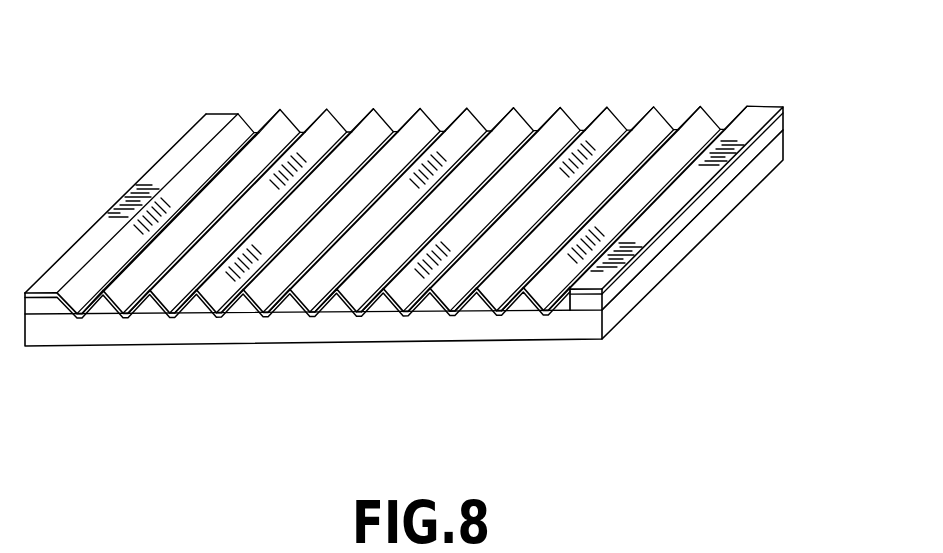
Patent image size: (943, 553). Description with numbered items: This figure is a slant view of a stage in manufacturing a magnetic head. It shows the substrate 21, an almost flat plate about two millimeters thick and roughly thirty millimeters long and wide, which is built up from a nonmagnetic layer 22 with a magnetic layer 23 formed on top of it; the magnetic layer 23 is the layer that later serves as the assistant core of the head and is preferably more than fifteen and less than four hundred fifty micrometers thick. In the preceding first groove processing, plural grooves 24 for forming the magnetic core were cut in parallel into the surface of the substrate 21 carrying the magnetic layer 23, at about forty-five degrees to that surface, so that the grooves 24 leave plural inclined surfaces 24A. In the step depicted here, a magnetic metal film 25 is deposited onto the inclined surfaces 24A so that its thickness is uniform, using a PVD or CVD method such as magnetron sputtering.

The substrate 21 is at (703, 253).
The nonmagnetic layer 22 is at (777, 158).
The magnetic layer 23 is at (787, 137).
The grooves for forming the magnetic core 24 is at (325, 130).
The inclined surfaces 24A is at (575, 123).
The magnetic metal film 25 is at (758, 117).